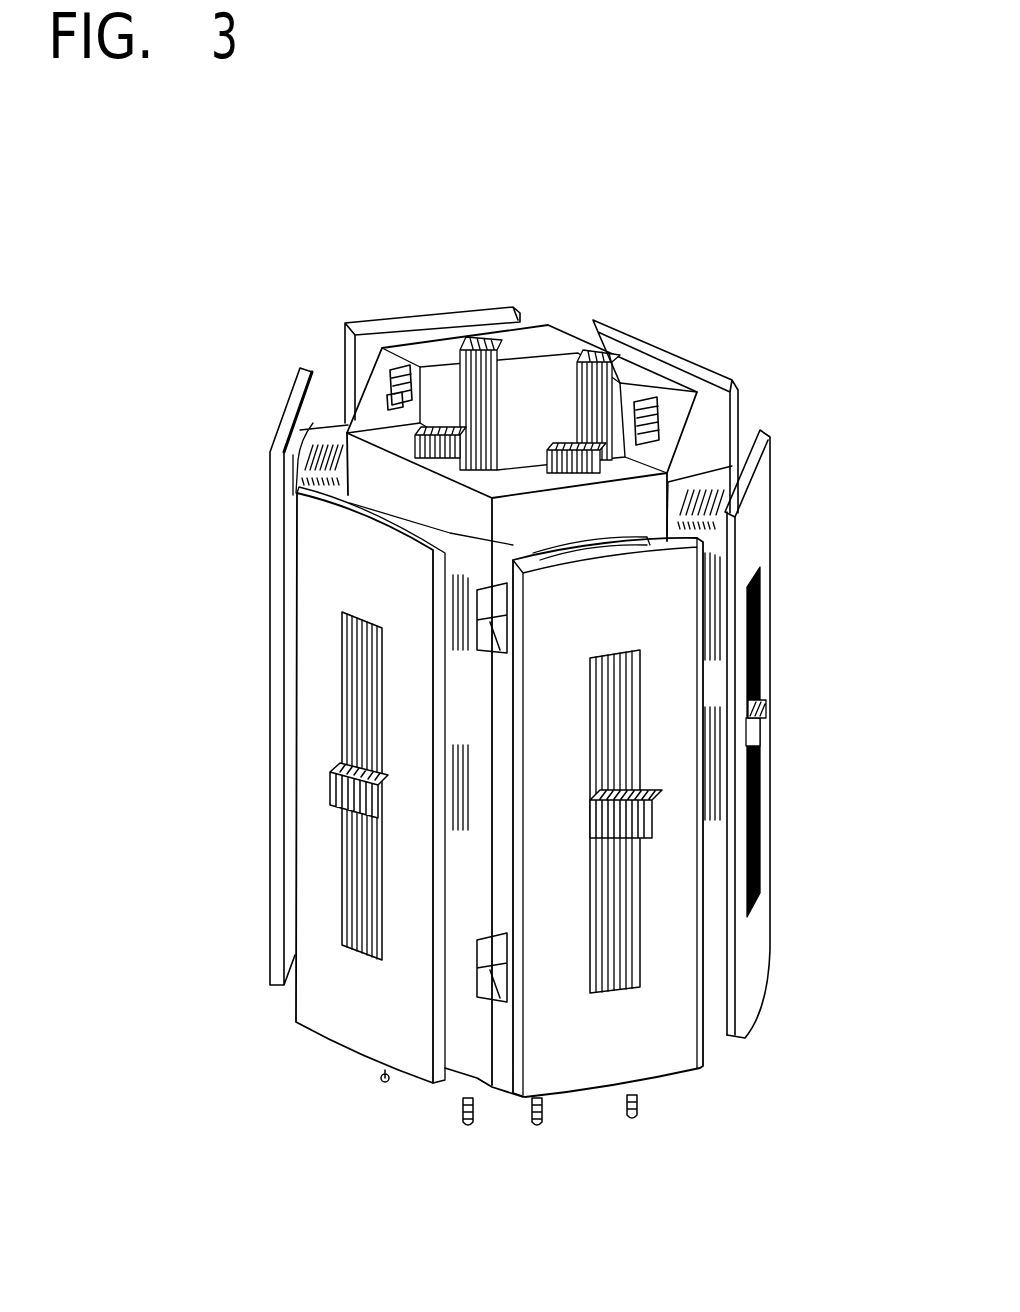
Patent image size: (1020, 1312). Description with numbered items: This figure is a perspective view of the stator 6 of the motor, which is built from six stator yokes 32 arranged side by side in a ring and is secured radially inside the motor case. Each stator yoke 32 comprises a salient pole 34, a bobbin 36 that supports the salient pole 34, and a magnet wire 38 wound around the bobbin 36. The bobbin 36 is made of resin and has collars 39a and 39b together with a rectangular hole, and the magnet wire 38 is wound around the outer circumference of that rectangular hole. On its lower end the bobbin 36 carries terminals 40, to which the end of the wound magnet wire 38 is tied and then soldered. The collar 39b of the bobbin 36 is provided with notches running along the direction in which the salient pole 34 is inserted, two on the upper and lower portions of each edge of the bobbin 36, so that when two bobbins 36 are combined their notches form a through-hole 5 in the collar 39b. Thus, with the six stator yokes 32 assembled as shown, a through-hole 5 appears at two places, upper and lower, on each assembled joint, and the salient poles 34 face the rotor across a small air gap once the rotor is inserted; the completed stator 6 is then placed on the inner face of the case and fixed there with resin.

The stator 6 is at (550, 292).
The stator yoke 32 is at (796, 497).
The salient pole 34 is at (350, 863).
The bobbin 36 is at (267, 675).
The magnet wire 38 is at (320, 438).
The collar 39a is at (270, 487).
The collar 39b is at (372, 395).
The through-hole 5 is at (492, 610).
The terminals 40 is at (533, 1122).